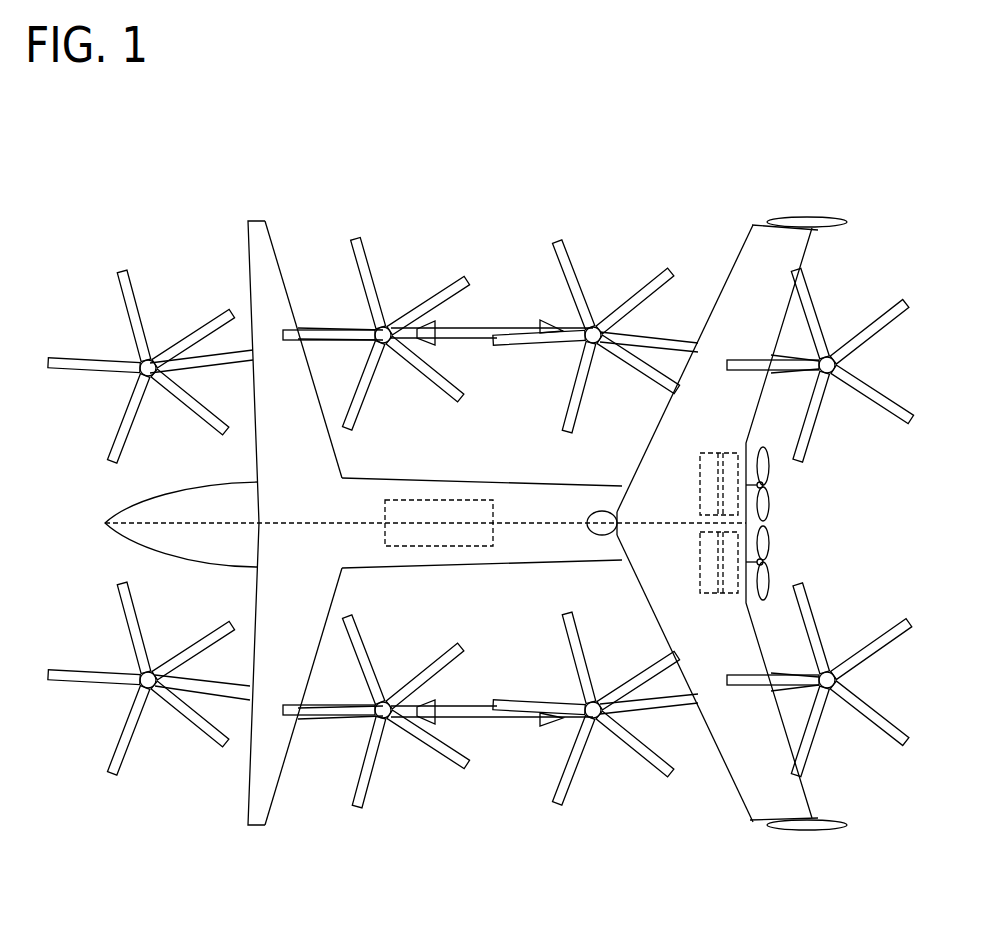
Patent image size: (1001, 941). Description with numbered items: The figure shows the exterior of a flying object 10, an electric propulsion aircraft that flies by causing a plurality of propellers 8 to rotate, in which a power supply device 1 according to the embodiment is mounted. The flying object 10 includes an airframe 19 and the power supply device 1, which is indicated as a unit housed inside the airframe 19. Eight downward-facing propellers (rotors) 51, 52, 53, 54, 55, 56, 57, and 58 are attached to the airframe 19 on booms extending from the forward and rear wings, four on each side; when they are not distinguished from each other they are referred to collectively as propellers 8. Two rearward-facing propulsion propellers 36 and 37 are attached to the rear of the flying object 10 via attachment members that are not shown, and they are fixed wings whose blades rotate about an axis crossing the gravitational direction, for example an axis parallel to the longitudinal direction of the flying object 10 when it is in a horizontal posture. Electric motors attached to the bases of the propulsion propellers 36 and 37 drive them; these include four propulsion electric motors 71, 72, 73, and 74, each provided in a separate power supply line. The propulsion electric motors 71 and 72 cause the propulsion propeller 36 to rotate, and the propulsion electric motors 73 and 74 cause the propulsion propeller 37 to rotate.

The flying object 10 is at (469, 480).
The propellers 8 is at (133, 323).
The airframe 19 is at (120, 503).
The power supply device 1 is at (458, 500).
The propeller 51 is at (137, 750).
The propeller 52 is at (137, 295).
The propeller 53 is at (372, 777).
The propeller 54 is at (372, 272).
The propeller 55 is at (575, 775).
The propeller 56 is at (580, 268).
The propeller 57 is at (882, 733).
The propeller 58 is at (880, 315).
The propulsion propeller 36 is at (770, 580).
The propulsion propeller 37 is at (770, 467).
The propulsion electric motor 71 is at (730, 597).
The propulsion electric motor 72 is at (663, 679).
The propulsion electric motor 73 is at (732, 453).
The propulsion electric motor 74 is at (696, 336).